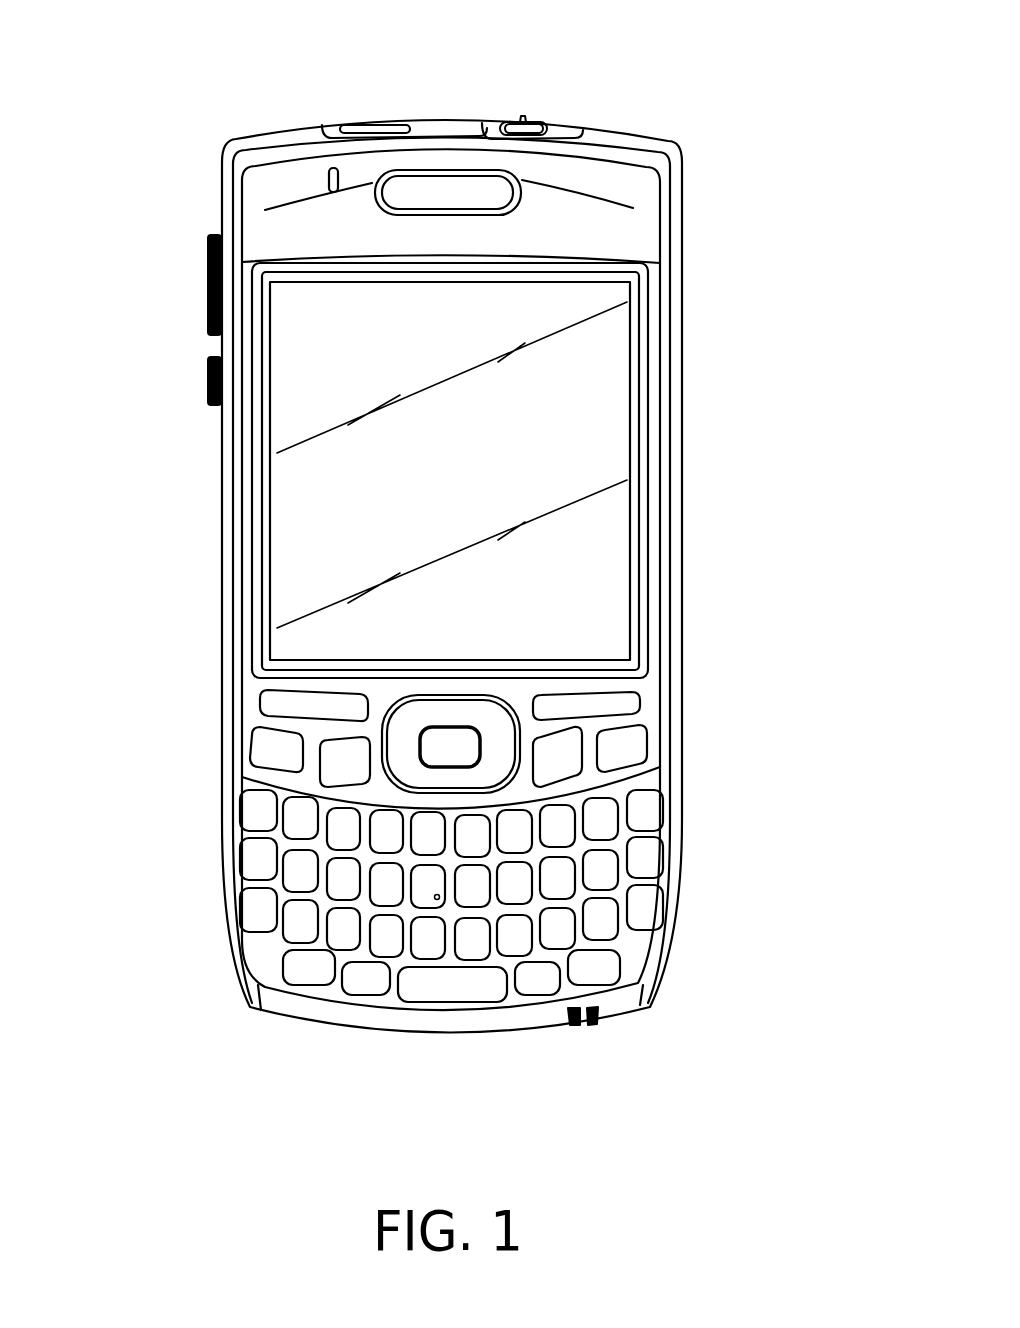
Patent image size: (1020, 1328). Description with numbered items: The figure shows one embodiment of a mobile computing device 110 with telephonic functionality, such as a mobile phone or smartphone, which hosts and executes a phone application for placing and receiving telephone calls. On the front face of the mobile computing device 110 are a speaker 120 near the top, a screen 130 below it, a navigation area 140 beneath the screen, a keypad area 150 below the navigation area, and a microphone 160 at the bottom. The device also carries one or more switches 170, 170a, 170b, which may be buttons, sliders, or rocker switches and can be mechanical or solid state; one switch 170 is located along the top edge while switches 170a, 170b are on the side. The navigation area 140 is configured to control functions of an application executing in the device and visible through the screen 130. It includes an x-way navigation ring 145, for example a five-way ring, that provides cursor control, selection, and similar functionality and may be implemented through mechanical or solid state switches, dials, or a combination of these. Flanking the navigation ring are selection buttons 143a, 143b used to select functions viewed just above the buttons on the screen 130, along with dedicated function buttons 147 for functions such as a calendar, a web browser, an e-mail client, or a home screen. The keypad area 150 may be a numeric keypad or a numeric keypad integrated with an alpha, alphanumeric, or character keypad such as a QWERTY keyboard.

The mobile computing device 110 is at (683, 147).
The speaker 120 is at (445, 185).
The screen 130 is at (598, 427).
The navigation area 140 is at (485, 699).
The selection button 143a is at (276, 700).
The selection button 143b is at (612, 706).
The navigation ring 145 is at (493, 722).
The dedicated function buttons 147 is at (340, 765).
The keypad area 150 is at (697, 793).
The microphone 160 is at (592, 1035).
The switch 170 is at (530, 117).
The switch 170a is at (206, 272).
The switch 170b is at (206, 383).